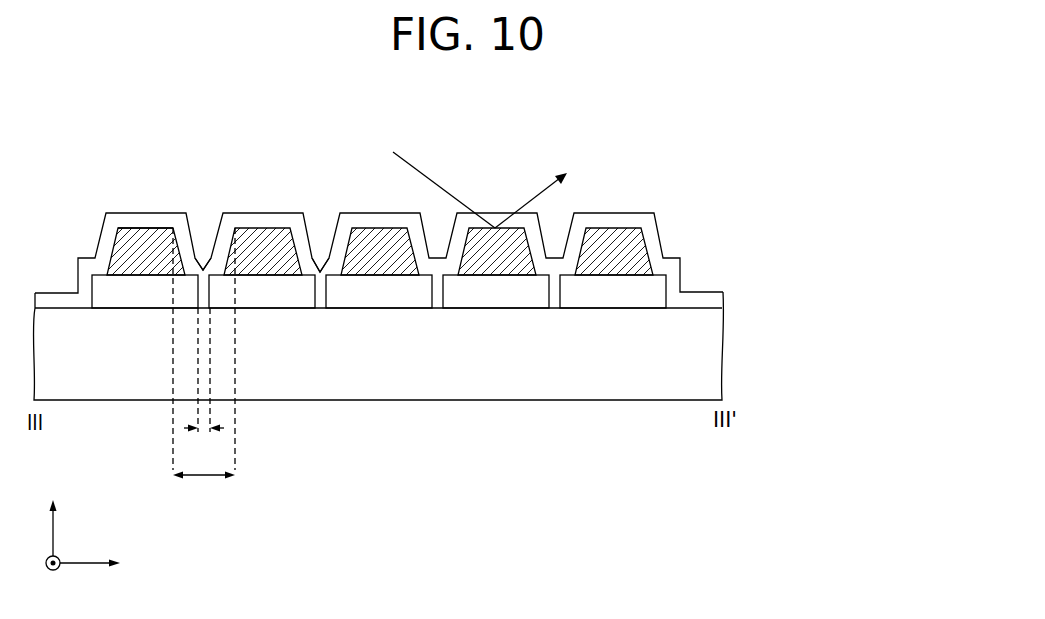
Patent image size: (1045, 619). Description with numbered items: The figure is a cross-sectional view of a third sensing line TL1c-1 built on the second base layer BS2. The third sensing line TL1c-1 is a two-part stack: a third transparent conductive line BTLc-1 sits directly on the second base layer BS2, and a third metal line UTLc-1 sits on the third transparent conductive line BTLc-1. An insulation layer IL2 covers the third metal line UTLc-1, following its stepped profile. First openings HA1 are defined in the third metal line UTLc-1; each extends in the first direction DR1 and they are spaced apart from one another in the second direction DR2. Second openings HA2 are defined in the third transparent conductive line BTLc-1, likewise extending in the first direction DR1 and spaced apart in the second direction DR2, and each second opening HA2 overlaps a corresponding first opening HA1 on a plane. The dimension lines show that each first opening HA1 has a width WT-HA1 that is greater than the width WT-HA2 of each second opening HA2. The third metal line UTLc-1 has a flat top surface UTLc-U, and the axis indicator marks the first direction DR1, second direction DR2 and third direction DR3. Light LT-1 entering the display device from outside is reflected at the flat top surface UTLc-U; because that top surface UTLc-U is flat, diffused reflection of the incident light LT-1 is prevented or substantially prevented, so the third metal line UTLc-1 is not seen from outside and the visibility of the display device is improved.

The second base layer BS2 is at (712, 348).
The third sensing line TL1c-1 is at (514, 268).
The third metal line UTLc-1 is at (627, 252).
The third transparent conductive line BTLc-1 is at (652, 292).
The insulation layer IL2 is at (653, 218).
The top surface UTLc-U is at (145, 228).
The first openings HA1 is at (203, 262).
The second openings HA2 is at (322, 282).
The light LT-1 is at (507, 190).
The width of first opening WT-HA1 is at (204, 477).
The width of second opening WT-HA2 is at (203, 430).
The first direction DR1 is at (54, 578).
The second direction DR2 is at (110, 564).
The third direction DR3 is at (55, 515).